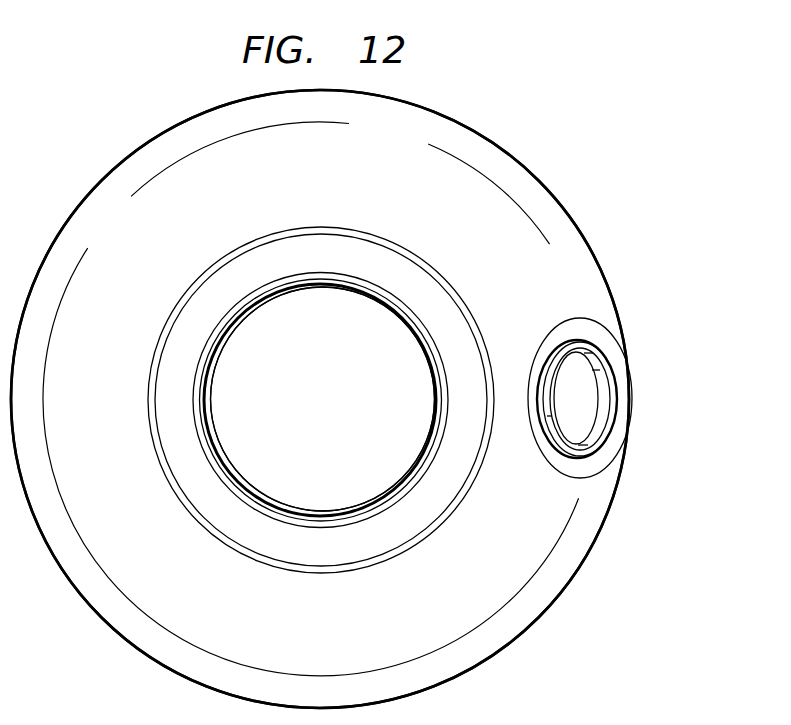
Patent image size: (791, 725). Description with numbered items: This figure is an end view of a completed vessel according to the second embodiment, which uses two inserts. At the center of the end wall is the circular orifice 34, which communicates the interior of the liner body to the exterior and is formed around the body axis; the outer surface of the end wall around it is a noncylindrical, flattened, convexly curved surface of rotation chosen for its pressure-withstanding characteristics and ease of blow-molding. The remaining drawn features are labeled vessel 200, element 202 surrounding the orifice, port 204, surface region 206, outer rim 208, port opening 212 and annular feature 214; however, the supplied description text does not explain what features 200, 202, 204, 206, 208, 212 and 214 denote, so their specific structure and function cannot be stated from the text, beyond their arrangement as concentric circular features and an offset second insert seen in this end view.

The closure assembly 200 is at (104, 131).
The central ring 202 is at (407, 326).
The port 204 is at (600, 374).
The face surface 206 is at (513, 555).
The outer rim 208 is at (605, 527).
The port opening 212 is at (600, 415).
The annular recess around port 214 is at (580, 331).
The orifice 34 is at (296, 446).